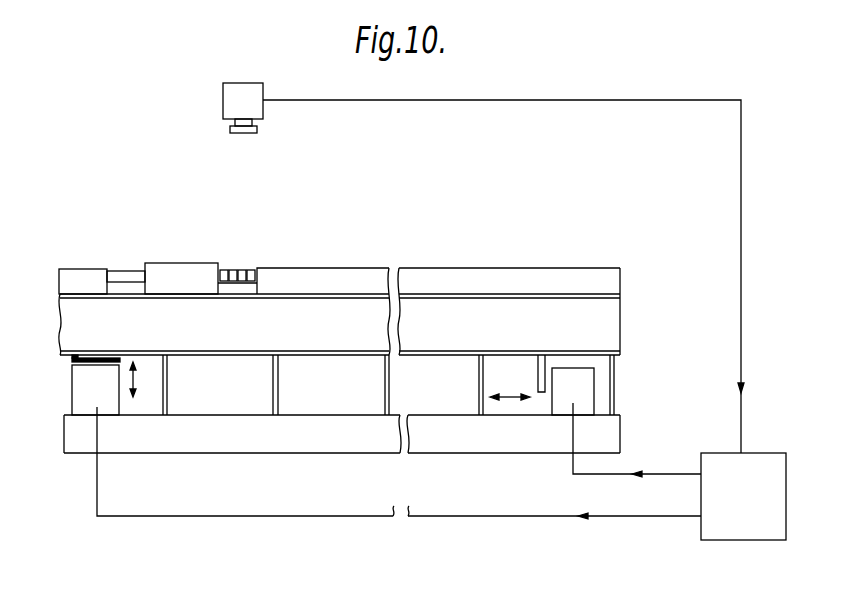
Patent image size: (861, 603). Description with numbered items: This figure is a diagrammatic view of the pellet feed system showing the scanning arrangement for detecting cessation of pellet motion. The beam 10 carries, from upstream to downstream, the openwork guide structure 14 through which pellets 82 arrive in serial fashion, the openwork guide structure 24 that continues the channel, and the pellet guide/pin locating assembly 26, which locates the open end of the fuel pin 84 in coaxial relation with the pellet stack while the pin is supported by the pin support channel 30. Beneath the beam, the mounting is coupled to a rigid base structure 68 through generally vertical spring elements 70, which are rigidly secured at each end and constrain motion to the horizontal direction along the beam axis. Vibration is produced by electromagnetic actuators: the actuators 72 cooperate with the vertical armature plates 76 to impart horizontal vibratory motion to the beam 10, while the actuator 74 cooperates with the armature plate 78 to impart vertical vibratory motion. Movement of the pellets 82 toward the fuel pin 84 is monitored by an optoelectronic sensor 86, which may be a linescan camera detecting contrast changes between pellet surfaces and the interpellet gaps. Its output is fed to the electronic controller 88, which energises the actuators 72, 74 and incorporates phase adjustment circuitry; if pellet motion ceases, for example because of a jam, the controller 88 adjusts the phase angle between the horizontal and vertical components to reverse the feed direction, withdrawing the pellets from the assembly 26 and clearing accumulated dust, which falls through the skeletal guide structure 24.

The beam 10 is at (597, 322).
The openwork guide structure 14 is at (520, 275).
The openwork guide structure 24 is at (268, 290).
The pellet guide/pin locating assembly 26 is at (197, 277).
The pin support channel 30 is at (82, 277).
The rigid base structure 68 is at (377, 438).
The spring elements 70 is at (167, 393).
The electromagnetic actuators 72 is at (583, 399).
The electromagnetic actuator 74 is at (80, 401).
The vertical armature plates 76 is at (543, 400).
The armature plate 78 is at (72, 360).
The pellets 82 is at (245, 270).
The fuel pin 84 is at (128, 277).
The optoelectronic sensor 86 is at (253, 92).
The electronic controller 88 is at (737, 462).